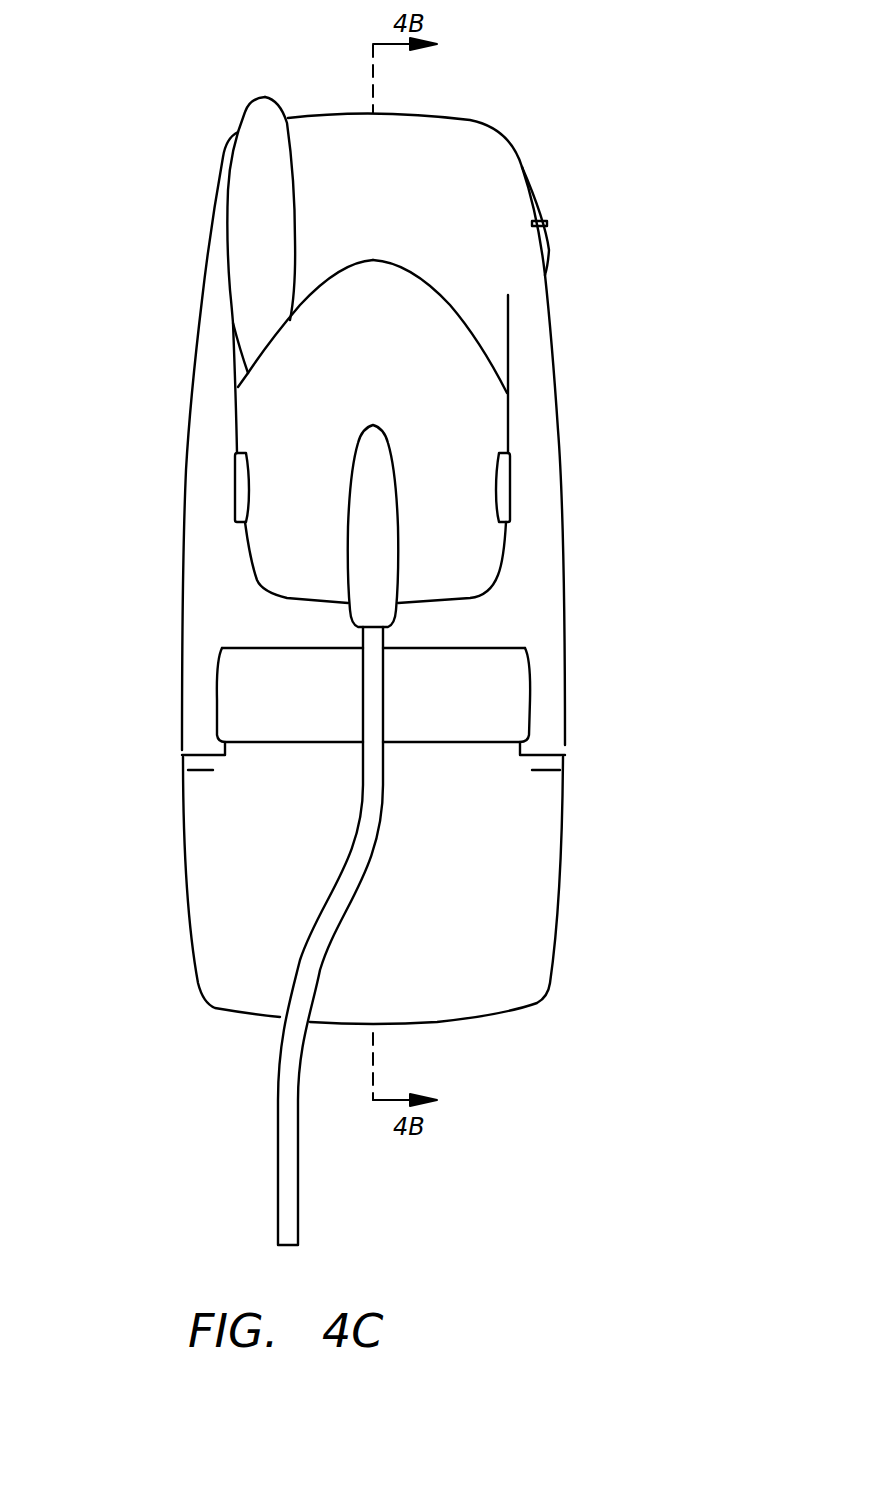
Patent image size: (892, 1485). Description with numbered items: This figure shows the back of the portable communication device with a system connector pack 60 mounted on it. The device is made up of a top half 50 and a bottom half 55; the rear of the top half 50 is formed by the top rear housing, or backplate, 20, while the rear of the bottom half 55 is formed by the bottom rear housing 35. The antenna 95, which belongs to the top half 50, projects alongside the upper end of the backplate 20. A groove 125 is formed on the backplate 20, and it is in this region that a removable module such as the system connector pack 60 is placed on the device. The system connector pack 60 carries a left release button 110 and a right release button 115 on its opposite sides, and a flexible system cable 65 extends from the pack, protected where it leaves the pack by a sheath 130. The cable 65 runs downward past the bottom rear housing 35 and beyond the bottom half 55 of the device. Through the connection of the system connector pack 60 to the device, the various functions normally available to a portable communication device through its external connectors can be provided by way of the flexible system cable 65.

The top rear housing 20 is at (416, 546).
The bottom rear housing 35 is at (487, 818).
The top half 50 is at (589, 744).
The bottom half 55 is at (589, 1026).
The system connector pack 60 is at (460, 432).
The flexible system cable 65 is at (287, 1122).
The antenna 95 is at (268, 135).
The left release button 110 is at (238, 488).
The right release button 115 is at (507, 497).
The groove 125 is at (495, 340).
The sheath 130 is at (383, 608).